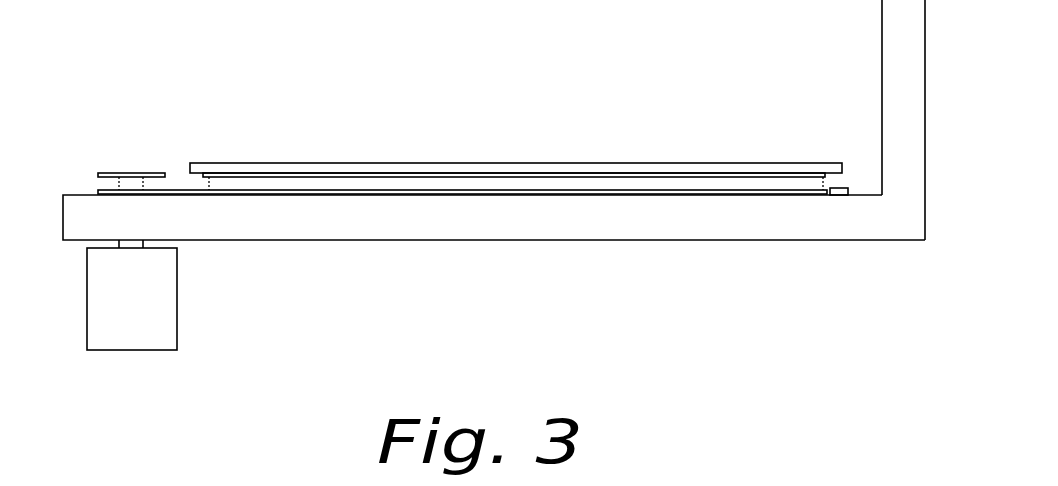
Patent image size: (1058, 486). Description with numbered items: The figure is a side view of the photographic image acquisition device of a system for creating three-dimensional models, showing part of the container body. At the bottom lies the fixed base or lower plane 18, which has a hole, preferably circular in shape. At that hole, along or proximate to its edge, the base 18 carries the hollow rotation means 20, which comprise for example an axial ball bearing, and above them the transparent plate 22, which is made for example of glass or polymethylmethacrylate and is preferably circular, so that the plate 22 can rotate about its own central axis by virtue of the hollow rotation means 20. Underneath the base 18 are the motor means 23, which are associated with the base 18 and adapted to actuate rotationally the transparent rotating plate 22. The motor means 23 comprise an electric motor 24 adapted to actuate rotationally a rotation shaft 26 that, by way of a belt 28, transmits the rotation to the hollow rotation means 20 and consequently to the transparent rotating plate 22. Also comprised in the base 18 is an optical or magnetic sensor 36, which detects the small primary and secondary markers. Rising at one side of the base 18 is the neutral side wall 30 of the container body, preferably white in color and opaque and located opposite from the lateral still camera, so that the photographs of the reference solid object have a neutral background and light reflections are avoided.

The base 18 is at (525, 223).
The hollow rotation means 20 is at (680, 192).
The transparent plate 22 is at (440, 165).
The motor means 23 is at (190, 273).
The electric motor 24 is at (113, 333).
The rotation shaft 26 is at (105, 173).
The belt 28 is at (397, 182).
The neutral side wall 30 is at (906, 46).
The sensor 36 is at (842, 190).